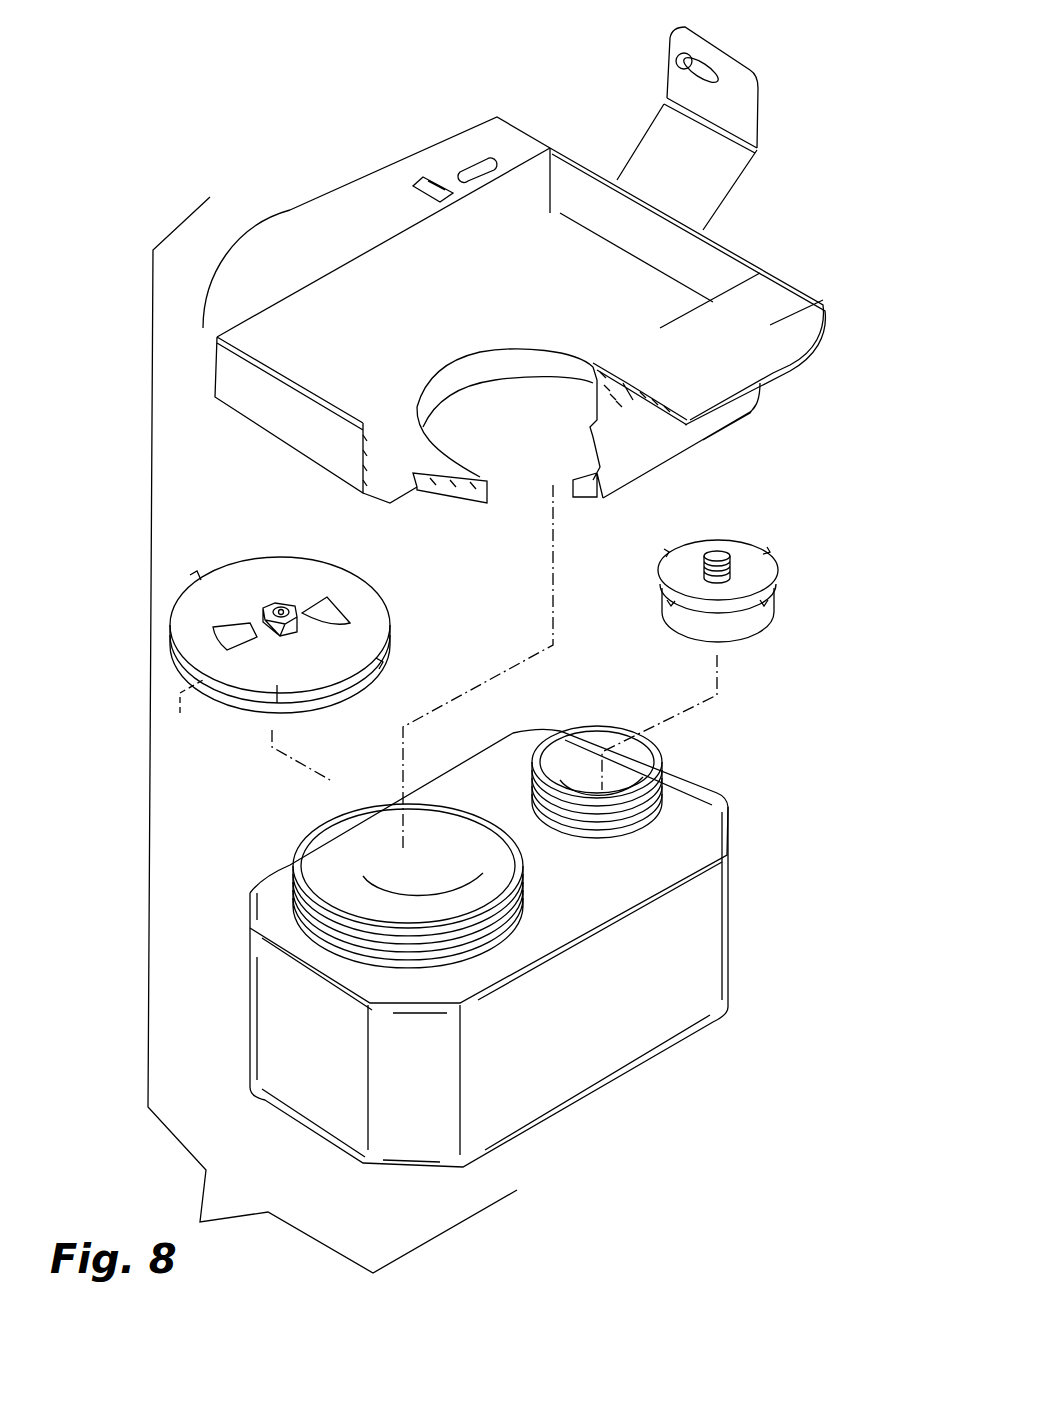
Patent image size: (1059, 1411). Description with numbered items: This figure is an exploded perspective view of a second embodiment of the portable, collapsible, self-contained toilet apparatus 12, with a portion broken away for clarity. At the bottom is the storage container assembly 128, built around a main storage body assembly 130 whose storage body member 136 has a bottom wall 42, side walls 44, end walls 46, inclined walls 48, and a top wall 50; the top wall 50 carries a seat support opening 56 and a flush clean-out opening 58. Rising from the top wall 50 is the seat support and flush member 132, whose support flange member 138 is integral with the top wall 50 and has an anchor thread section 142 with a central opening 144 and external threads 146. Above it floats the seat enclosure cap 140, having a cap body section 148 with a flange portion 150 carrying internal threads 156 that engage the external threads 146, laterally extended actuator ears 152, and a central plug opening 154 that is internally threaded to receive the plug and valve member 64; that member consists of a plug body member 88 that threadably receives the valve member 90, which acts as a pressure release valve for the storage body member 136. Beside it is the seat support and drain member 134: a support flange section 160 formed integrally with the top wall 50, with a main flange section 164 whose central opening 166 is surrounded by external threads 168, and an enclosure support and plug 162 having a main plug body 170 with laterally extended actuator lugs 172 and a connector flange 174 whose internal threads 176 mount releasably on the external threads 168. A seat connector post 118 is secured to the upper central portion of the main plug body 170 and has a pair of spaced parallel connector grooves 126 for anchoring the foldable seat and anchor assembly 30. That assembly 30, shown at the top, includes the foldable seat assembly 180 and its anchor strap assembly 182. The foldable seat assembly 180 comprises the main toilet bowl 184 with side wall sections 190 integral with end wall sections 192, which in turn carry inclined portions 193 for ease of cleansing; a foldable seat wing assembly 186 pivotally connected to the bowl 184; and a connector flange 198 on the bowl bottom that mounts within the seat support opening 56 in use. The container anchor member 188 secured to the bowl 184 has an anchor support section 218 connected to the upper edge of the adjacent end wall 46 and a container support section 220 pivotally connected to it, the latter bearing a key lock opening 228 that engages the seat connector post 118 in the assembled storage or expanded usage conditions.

The dispenser assembly 12 is at (788, 137).
The foldable seat and anchor assembly 30 is at (736, 252).
The bottom wall 42 is at (550, 1117).
The side walls 44 is at (610, 1030).
The end walls 46 is at (283, 1073).
The inclined walls 48 is at (730, 900).
The top wall 50 is at (680, 827).
The seat support opening 56 is at (427, 897).
The flush clean-out opening 58 is at (612, 790).
The plug and valve member 64 is at (296, 612).
The plug body member 88 is at (270, 627).
The valve member 90 is at (277, 607).
The seat connector post 118 is at (667, 578).
The connector grooves 126 is at (750, 557).
The storage container assembly 128 is at (720, 790).
The main storage body assembly 130 is at (713, 942).
The seat support and flush member 132 is at (396, 628).
The seat support and drain member 134 is at (784, 572).
The storage body member 136 is at (270, 1020).
The support flange member 138 is at (297, 883).
The seat enclosure cap 140 is at (300, 710).
The anchor thread section 142 is at (260, 943).
The central opening 144 is at (337, 850).
The external threads 146 is at (355, 947).
The cap body section 148 is at (290, 577).
The flange portion 150 is at (243, 700).
The actuator ears 152 is at (218, 565).
The central plug opening 154 is at (303, 623).
The internal threads 156 is at (183, 711).
The support flange section 160 is at (660, 755).
The enclosure support and plug 162 is at (728, 560).
The main flange section 164 is at (507, 760).
The central opening 166 is at (563, 758).
The external threads 168 is at (713, 780).
The main plug body 170 is at (667, 568).
The actuator lugs 172 is at (664, 556).
The connector flange 174 is at (712, 633).
The internal threads 176 is at (680, 625).
The foldable seat assembly 180 is at (567, 183).
The anchor strap assembly 182 is at (423, 182).
The main toilet bowl 184 is at (360, 457).
The foldable seat wing assembly 186 is at (297, 222).
The container anchor member 188 is at (738, 192).
The side wall sections 190 is at (273, 347).
The end wall sections 192 is at (633, 232).
The inclined portions 193 is at (553, 278).
The connector flange 198 is at (463, 497).
The anchor support section 218 is at (693, 180).
The container support section 220 is at (685, 90).
The key lock opening 228 is at (696, 64).